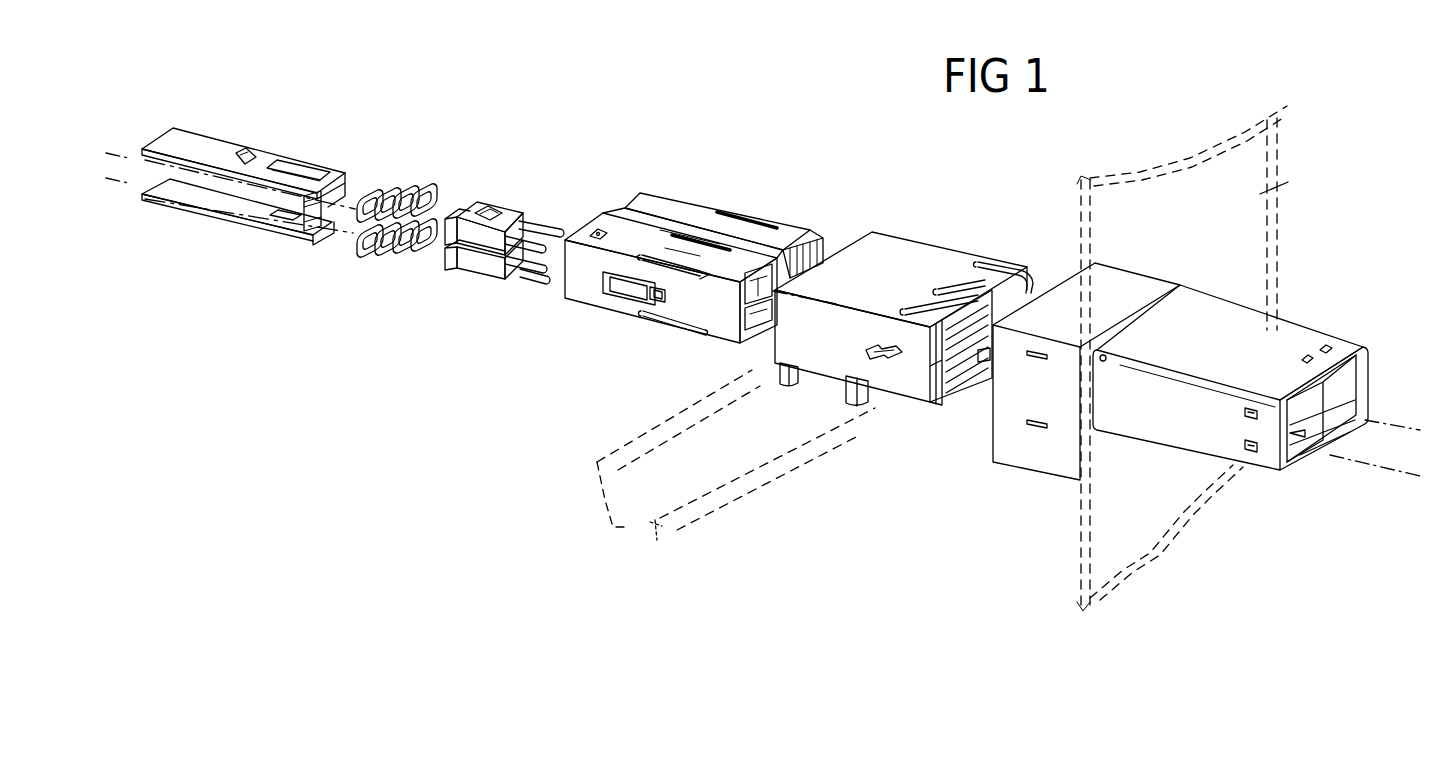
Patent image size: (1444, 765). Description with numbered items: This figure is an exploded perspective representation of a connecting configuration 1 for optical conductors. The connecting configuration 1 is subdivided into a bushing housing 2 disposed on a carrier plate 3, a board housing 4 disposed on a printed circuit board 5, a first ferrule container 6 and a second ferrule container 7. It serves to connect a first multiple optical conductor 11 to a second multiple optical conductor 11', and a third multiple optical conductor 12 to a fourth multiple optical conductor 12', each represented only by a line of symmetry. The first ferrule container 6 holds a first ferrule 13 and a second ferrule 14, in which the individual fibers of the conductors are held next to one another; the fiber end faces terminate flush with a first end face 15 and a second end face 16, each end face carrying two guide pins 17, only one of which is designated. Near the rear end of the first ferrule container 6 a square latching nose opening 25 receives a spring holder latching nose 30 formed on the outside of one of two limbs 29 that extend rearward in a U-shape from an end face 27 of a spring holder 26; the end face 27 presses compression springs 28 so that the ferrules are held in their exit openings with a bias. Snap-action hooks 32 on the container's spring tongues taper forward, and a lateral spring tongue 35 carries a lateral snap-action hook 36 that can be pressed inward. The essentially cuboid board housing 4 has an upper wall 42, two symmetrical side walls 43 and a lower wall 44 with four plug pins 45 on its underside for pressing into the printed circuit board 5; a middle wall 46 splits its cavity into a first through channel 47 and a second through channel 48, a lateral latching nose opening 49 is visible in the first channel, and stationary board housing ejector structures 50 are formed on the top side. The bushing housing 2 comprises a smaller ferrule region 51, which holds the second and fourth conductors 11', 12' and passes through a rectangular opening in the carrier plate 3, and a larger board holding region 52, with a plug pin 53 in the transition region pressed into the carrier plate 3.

The connecting configuration 1 is at (312, 582).
The bushing housing 2 is at (1230, 416).
The carrier plate 3 is at (1283, 188).
The board housing 4 is at (977, 346).
The printed circuit board 5 is at (657, 500).
The first ferrule container 6 is at (672, 242).
The second ferrule container 7 is at (673, 196).
The first multiple optical conductor 11 is at (229, 226).
The third multiple optical conductor 12 is at (230, 135).
The second multiple optical conductor 11' is at (1375, 510).
The fourth multiple optical conductor 12' is at (1100, 360).
The first ferrule 13 is at (509, 238).
The second ferrule 14 is at (514, 212).
The first end face 15 is at (514, 273).
The second end face 16 is at (523, 222).
The guide pins 17 is at (552, 233).
The latching nose opening 25 is at (602, 232).
The spring holder 26 is at (243, 173).
The end face 27 is at (324, 228).
The compression springs 28 is at (373, 188).
The limbs 29 is at (288, 155).
The spring holder latching nose 30 is at (246, 152).
The snap-action hooks 32 is at (735, 250).
The lateral spring tongue 35 is at (626, 289).
The lateral snap-action hook 36 is at (666, 296).
The upper wall 42 is at (920, 231).
The side walls 43 is at (917, 381).
The lower wall 44 is at (978, 381).
The plug pins 45 is at (846, 388).
The middle wall 46 is at (975, 331).
The first through channel 47 is at (990, 356).
The second through channel 48 is at (1035, 283).
The lateral latching nose opening 49 is at (866, 353).
The board housing ejector structures 50 is at (968, 290).
The ferrule region 51 is at (1263, 465).
The board holding region 52 is at (1036, 472).
The plug pin 53 is at (1106, 364).